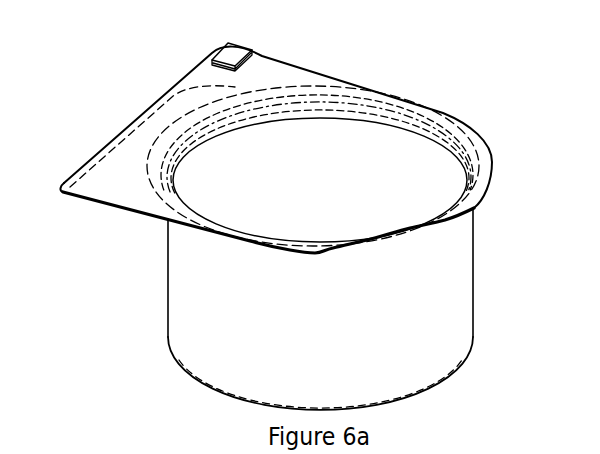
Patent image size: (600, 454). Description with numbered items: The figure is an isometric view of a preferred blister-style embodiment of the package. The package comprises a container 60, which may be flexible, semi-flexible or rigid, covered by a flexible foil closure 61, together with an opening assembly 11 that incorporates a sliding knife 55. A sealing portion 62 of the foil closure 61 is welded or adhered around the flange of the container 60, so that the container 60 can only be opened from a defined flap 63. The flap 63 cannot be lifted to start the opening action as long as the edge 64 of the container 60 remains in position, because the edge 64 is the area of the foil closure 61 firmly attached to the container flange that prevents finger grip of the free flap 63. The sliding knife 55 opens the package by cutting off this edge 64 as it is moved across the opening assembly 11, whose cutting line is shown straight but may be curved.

The container 60 is at (445, 307).
The flexible foil closure 61 is at (499, 122).
The sealing portion 62 is at (308, 88).
The opening assembly 11 is at (180, 102).
The edge 64 is at (123, 133).
The flap 63 is at (122, 177).
The sliding knife 55 is at (200, 34).